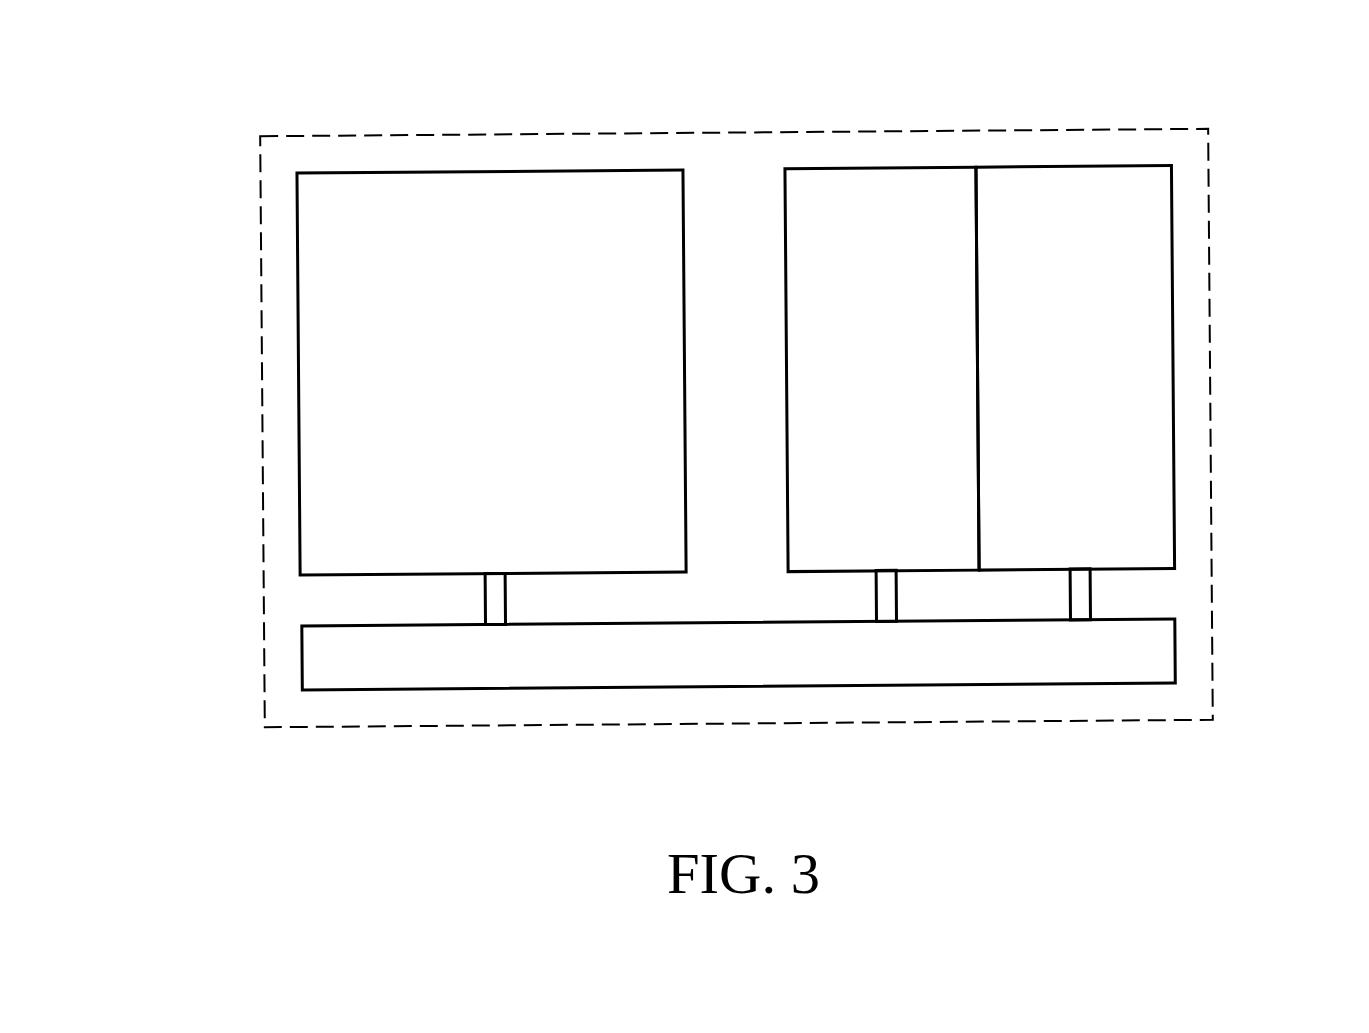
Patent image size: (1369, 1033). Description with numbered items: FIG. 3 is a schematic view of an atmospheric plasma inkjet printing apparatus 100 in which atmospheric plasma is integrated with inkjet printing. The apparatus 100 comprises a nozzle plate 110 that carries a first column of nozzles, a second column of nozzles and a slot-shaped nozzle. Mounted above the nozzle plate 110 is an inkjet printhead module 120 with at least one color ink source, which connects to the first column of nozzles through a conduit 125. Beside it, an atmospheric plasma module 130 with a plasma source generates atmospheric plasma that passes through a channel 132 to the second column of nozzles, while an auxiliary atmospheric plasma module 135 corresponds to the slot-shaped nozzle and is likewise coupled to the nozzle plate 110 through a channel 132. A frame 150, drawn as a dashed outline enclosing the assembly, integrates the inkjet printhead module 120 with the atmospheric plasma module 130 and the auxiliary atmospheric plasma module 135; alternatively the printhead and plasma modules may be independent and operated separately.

The atmospheric plasma inkjet printing apparatus 100 is at (204, 109).
The nozzle plate 110 is at (325, 664).
The inkjet printhead module 120 is at (477, 193).
The conduit 125 is at (496, 601).
The atmospheric plasma module 130 is at (867, 194).
The auxiliary atmospheric plasma module 135 is at (1078, 196).
The channel 132 is at (886, 611).
The frame 150 is at (1210, 133).